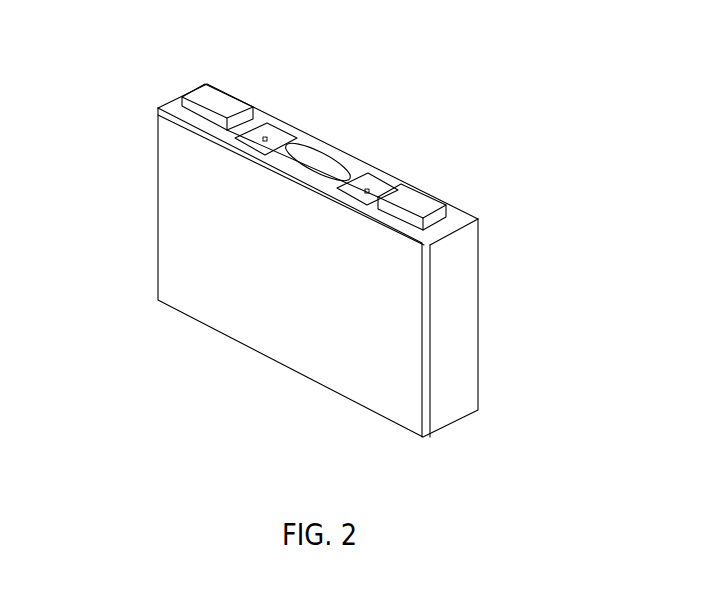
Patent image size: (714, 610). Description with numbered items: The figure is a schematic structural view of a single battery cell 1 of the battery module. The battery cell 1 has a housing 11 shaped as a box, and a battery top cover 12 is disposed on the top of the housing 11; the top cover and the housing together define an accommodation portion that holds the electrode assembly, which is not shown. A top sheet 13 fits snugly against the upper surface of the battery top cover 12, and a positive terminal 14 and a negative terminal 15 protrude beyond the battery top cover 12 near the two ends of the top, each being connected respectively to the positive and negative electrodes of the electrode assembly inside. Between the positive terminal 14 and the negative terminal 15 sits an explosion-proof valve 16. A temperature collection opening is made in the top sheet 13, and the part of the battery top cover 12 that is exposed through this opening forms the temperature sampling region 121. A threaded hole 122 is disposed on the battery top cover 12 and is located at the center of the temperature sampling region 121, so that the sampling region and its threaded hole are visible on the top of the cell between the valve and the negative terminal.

The battery cell 1 is at (319, 232).
The housing 11 is at (172, 246).
The battery top cover 12 is at (435, 147).
The temperature sampling region 121 is at (385, 186).
The threaded hole 122 is at (387, 182).
The top sheet 13 is at (322, 137).
The positive terminal 14 is at (220, 98).
The negative terminal 15 is at (447, 205).
The explosion-proof valve 16 is at (300, 166).